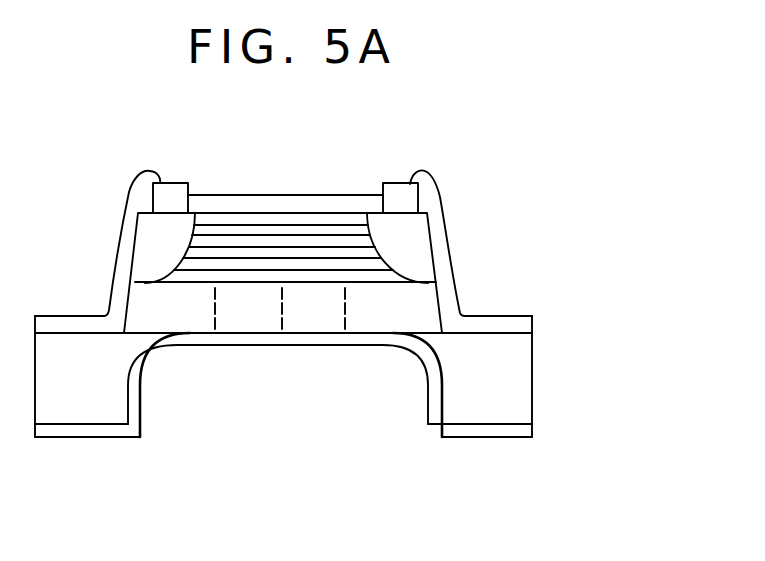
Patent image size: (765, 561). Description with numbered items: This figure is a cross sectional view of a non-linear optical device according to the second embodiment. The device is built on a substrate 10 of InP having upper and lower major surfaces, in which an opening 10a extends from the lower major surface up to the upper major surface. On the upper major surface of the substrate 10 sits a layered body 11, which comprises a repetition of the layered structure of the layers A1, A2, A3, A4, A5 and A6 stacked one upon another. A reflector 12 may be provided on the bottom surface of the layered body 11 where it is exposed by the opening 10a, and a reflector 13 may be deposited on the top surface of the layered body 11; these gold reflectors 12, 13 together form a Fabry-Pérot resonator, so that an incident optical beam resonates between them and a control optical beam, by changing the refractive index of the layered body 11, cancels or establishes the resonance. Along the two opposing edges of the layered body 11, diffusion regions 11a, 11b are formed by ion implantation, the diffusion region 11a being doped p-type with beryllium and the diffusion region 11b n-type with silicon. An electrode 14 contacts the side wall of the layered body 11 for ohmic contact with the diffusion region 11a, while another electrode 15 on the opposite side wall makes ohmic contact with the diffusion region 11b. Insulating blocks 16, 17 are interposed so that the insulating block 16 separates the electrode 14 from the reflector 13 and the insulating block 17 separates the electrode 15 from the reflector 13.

The substrate 10 is at (510, 375).
The opening 10a is at (388, 372).
The layered body 11 is at (252, 200).
The diffusion region 11a is at (172, 255).
The diffusion region 11b is at (400, 248).
The reflector 12 is at (520, 430).
The reflector 13 is at (290, 202).
The electrode 14 is at (146, 191).
The electrode 15 is at (510, 325).
The insulating block 16 is at (177, 196).
The insulating block 17 is at (397, 195).
The layer A1 is at (362, 220).
The layer A2 is at (343, 227).
The layer A3 is at (323, 240).
The layer A4 is at (303, 253).
The layer A5 is at (270, 264).
The layer A6 is at (242, 275).